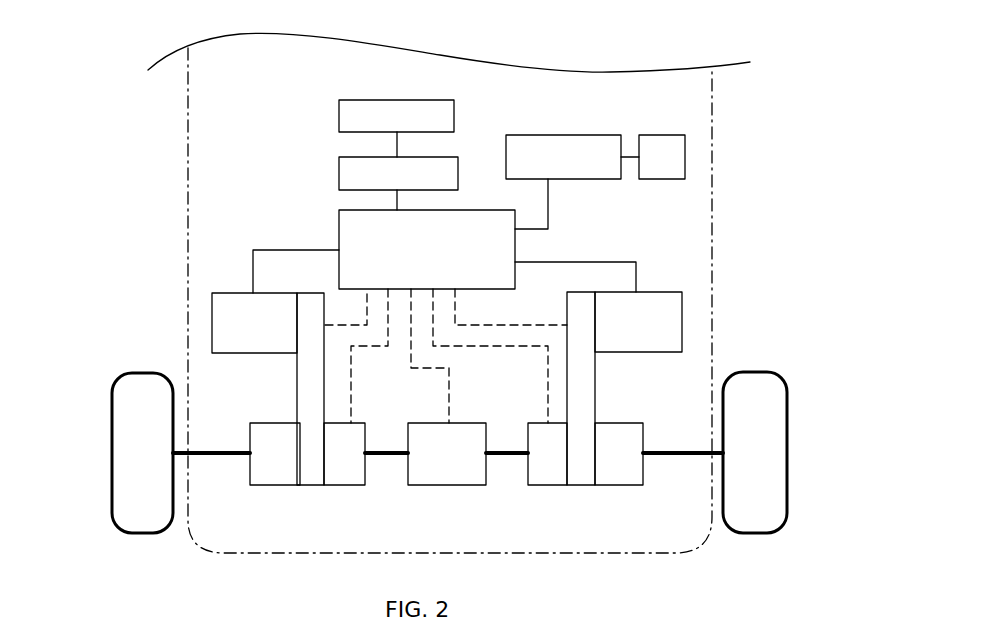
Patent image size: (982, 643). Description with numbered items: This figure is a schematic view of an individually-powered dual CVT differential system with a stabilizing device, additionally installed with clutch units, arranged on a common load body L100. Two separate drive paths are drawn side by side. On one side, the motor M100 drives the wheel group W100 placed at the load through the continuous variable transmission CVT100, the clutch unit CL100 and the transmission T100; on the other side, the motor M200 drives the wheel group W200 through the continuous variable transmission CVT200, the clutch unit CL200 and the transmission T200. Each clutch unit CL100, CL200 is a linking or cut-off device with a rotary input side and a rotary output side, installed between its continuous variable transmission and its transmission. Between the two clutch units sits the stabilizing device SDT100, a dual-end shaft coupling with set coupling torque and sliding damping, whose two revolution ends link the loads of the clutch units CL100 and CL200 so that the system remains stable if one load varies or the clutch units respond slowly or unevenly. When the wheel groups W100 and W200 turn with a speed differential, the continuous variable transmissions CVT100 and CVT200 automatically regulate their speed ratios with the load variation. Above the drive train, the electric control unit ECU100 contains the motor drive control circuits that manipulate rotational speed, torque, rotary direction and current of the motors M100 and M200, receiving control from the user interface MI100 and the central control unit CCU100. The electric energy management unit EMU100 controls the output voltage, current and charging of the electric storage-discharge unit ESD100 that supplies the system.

The common load body L100 is at (185, 184).
The electric storage-discharge unit ESD100 is at (396, 116).
The electric energy management unit EMU100 is at (398, 173).
The electric control unit ECU100 is at (427, 249).
The central control unit CCU100 is at (563, 157).
The user interface MI100 is at (667, 140).
The motor M100 is at (254, 323).
The motor M200 is at (638, 322).
The continuous variable transmission CVT100 is at (300, 412).
The continuous variable transmission CVT200 is at (587, 413).
The transmission T100 is at (266, 477).
The transmission T200 is at (627, 478).
The clutch unit CL100 is at (341, 465).
The clutch unit CL200 is at (553, 467).
The stabilizing device SDT100 is at (433, 467).
The wheel group W100 is at (127, 477).
The wheel group W200 is at (765, 477).